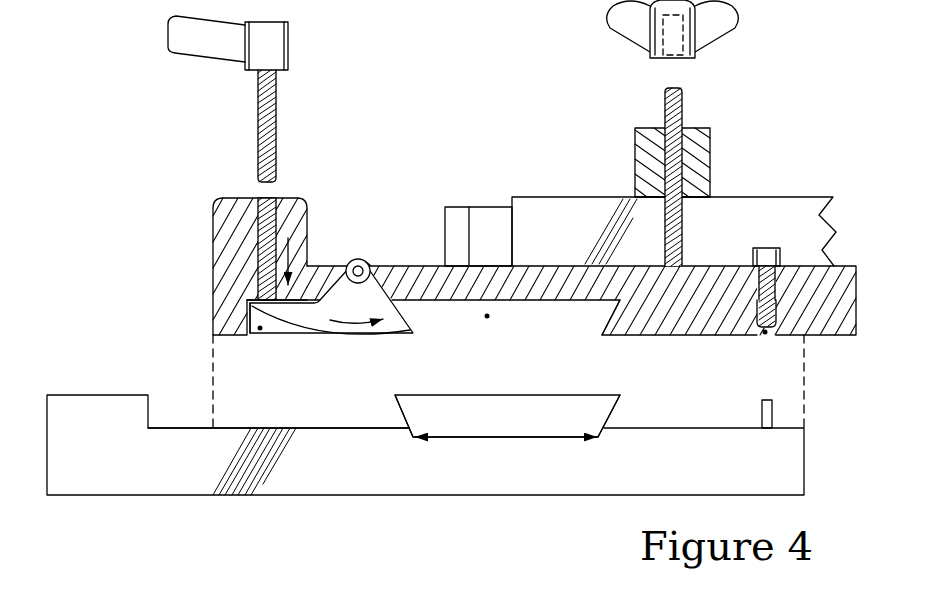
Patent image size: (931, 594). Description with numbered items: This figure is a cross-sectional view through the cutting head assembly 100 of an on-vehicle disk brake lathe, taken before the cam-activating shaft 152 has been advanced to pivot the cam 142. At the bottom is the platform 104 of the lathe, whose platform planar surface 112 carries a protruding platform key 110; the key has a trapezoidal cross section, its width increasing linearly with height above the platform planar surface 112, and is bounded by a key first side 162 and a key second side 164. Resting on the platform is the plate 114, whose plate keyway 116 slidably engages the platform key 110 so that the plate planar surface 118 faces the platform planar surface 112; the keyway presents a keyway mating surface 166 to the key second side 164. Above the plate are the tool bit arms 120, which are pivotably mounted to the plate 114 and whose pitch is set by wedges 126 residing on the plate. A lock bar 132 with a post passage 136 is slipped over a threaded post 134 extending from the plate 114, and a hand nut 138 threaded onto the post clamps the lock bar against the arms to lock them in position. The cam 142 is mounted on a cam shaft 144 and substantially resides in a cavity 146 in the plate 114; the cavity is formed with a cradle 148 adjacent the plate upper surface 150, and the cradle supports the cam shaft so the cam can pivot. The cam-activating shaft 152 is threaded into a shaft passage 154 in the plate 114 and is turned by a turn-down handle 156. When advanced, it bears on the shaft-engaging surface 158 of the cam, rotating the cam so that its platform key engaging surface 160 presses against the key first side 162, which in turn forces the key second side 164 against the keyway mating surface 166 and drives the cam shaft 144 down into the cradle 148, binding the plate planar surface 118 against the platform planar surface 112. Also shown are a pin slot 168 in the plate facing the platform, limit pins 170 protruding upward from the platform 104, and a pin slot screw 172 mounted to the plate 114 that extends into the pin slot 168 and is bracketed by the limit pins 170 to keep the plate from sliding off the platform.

The cutting head assembly 100 is at (503, 90).
The platform 104 is at (108, 390).
The platform key 110 is at (490, 398).
The platform planar surface 112 is at (323, 428).
The plate 114 is at (197, 201).
The plate keyway 116 is at (487, 316).
The plate planar surface 118 is at (690, 335).
The tool bit arms 120 is at (797, 197).
The wedges 126 is at (490, 213).
The lock bar 132 is at (714, 128).
The threaded post 134 is at (682, 110).
The post passage 136 is at (683, 170).
The hand nut 138 is at (718, 15).
The cam 142 is at (362, 256).
The cam shaft 144 is at (367, 264).
The cavity 146 is at (260, 328).
The cradle 148 is at (386, 270).
The plate upper surface 150 is at (338, 265).
The cam-activating shaft 152 is at (258, 115).
The shaft passage 154 is at (258, 237).
The turn-down handle 156 is at (195, 38).
The shaft-engaging surface 158 is at (268, 298).
The platform key engaging surface 160 is at (405, 318).
The key first side 162 is at (402, 418).
The key second side 164 is at (606, 425).
The keyway mating surface 166 is at (613, 327).
The pin slot 168 is at (765, 332).
The limit pins 170 is at (774, 410).
The pin slot screw 172 is at (773, 252).